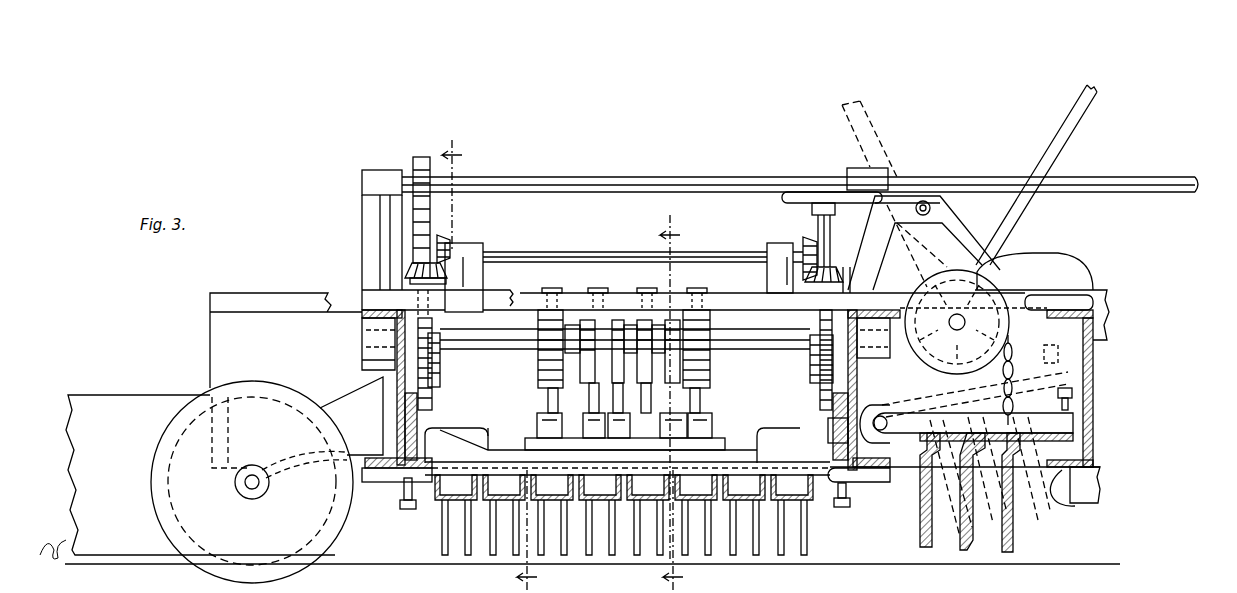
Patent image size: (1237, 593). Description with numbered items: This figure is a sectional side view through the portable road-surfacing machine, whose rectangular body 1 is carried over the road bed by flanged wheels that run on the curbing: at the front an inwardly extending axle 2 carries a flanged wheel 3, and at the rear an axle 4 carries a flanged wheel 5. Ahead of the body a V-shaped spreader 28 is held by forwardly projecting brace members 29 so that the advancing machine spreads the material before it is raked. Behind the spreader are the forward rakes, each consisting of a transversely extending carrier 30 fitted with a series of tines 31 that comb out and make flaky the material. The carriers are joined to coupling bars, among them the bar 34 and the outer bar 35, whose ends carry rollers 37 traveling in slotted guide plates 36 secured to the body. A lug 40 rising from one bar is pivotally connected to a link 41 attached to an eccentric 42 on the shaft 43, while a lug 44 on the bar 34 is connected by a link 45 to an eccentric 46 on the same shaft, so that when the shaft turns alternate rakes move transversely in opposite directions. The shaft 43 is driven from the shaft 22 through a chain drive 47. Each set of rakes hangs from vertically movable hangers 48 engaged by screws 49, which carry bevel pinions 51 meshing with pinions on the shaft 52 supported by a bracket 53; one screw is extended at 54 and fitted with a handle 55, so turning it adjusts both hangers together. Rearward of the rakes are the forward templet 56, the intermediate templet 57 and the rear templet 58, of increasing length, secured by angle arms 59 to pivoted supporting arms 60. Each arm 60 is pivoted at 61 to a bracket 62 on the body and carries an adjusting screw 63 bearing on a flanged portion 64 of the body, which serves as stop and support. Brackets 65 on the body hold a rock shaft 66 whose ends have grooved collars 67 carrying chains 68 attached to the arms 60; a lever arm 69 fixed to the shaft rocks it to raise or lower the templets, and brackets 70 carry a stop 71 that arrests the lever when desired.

The body 1 is at (375, 325).
The axle 2 is at (246, 492).
The flanged wheel 3 is at (160, 432).
The axle 4 is at (600, 397).
The flanged wheel 5 is at (452, 193).
The shaft 22 is at (563, 177).
The spreader 28 is at (92, 461).
The brace member 29 is at (220, 328).
The carrier 30 is at (437, 502).
The tine 31 is at (610, 555).
The coupling bar 34 is at (525, 447).
The coupling bar 35 is at (762, 451).
The slotted guide plate 36 is at (395, 408).
The roller 37 is at (417, 420).
The lug 40 is at (540, 420).
The link 41 is at (548, 393).
The eccentric 42 is at (628, 383).
The shaft 43 is at (497, 333).
The lug 44 is at (650, 446).
The link 45 is at (548, 405).
The eccentric 46 is at (538, 373).
The chain drive 47 is at (416, 158).
The hanger 48 is at (440, 362).
The screw 49 is at (432, 320).
The bevel pinion 51 is at (448, 242).
The shaft 52 is at (590, 250).
The bracket 53 is at (468, 277).
The extension 54 is at (818, 222).
The handle 55 is at (815, 192).
The forward templet 56 is at (920, 524).
The intermediate templet 57 is at (964, 556).
The rear templet 58 is at (1013, 548).
The angle arm 59 is at (1022, 510).
The supporting arm 60 is at (1063, 423).
The pivot 61 is at (880, 416).
The bracket 62 is at (905, 407).
The adjusting screw 63 is at (1075, 437).
The flanged portion 64 is at (1067, 410).
The bracket 65 is at (1034, 271).
The rock shaft 66 is at (960, 332).
The grooved collar 67 is at (944, 331).
The chain 68 is at (1012, 345).
The lever arm 69 is at (870, 126).
The bracket 70 is at (960, 226).
The stop 71 is at (925, 201).